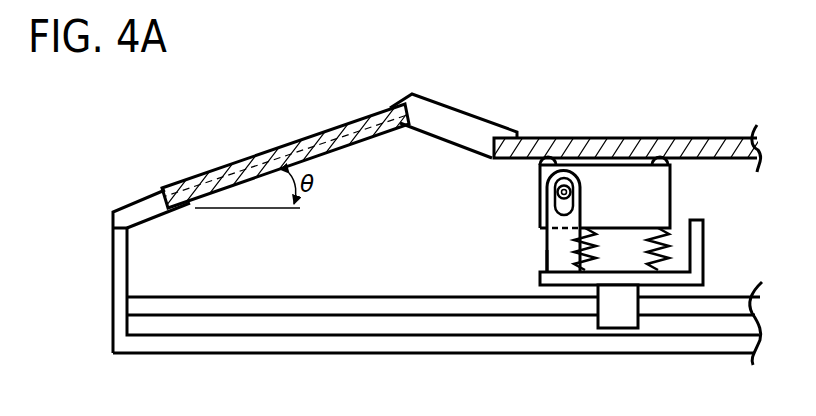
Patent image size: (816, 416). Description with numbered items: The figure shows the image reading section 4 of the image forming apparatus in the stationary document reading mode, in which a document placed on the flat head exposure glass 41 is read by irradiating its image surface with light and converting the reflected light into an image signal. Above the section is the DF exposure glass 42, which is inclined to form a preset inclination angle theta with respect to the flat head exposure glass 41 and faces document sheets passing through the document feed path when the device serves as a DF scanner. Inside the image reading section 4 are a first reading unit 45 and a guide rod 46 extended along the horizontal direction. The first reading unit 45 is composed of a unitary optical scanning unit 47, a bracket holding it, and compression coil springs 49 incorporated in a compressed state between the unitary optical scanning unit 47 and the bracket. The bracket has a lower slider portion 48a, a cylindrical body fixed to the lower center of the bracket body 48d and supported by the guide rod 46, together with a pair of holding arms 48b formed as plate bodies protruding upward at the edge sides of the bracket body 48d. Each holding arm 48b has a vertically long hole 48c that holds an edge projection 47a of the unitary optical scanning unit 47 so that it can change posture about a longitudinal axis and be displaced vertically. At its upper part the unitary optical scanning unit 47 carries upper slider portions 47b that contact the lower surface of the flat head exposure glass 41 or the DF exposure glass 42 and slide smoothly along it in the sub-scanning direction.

The image reading section 4 is at (349, 79).
The flat head exposure glass 41 is at (714, 137).
The DF exposure glass 42 is at (264, 150).
The first reading unit 45 is at (728, 210).
The guide rod 46 is at (323, 305).
The unitary optical scanning unit 47 is at (664, 197).
The edge projection 47a is at (571, 190).
The upper slider portion 47b is at (538, 164).
The lower slider portion 48a is at (617, 330).
The holding arm 48b is at (555, 253).
The vertically long hole 48c is at (557, 205).
The bracket body 48d is at (697, 270).
The compression coil spring 49 is at (597, 250).